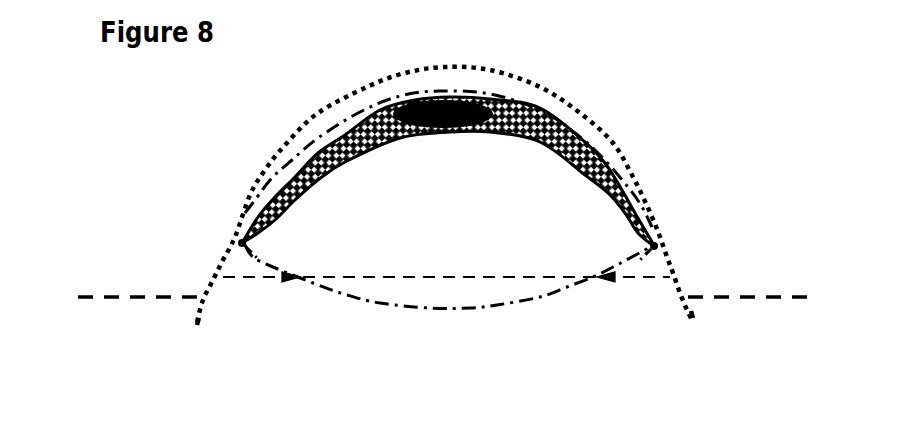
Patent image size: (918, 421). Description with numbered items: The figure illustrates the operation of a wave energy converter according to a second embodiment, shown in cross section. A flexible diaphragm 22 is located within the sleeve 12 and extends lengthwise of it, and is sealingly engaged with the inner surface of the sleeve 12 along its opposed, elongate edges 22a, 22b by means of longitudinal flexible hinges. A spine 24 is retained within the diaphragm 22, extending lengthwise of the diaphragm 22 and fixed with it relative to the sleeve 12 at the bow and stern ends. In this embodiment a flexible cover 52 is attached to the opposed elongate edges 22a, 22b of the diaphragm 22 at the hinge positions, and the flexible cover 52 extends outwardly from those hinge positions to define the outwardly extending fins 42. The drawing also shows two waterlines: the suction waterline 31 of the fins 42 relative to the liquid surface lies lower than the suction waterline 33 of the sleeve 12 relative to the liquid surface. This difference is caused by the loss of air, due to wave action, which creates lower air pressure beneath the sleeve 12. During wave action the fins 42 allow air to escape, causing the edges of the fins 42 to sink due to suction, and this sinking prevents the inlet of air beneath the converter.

The flexible cover 52 is at (357, 78).
The flexible diaphragm 22 is at (557, 130).
The elongate edge 22a is at (240, 241).
The elongate edge 22b is at (663, 243).
The spine 24 is at (430, 133).
The suction waterline of the sleeve 33 is at (465, 277).
The sleeve 12 is at (484, 308).
The suction waterline of the fins 31 is at (718, 299).
The fins 42 is at (197, 330).